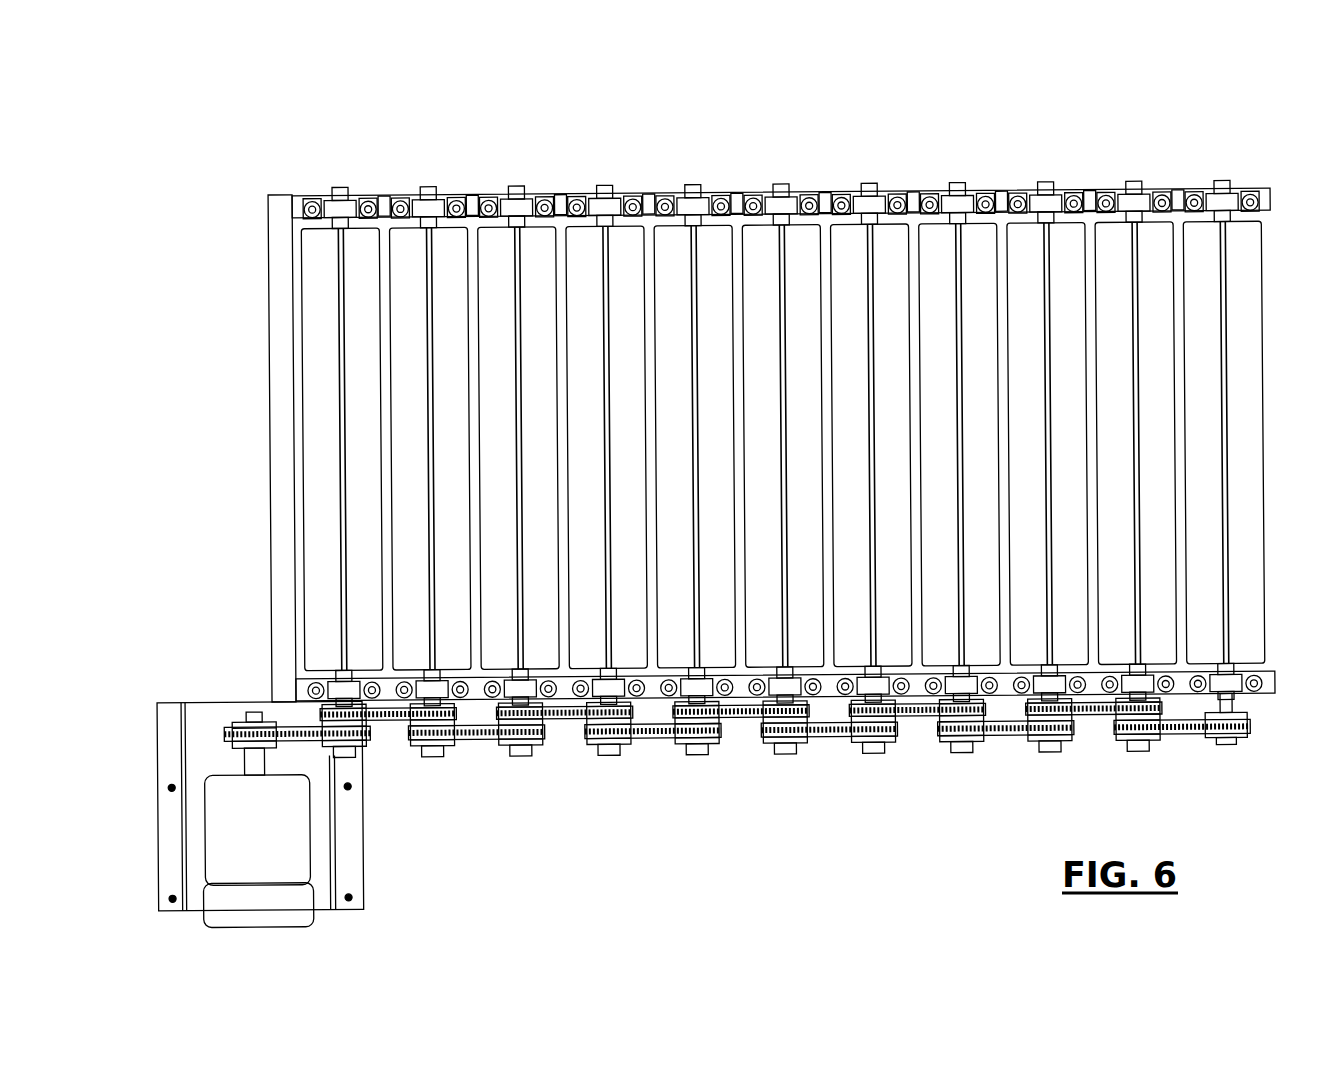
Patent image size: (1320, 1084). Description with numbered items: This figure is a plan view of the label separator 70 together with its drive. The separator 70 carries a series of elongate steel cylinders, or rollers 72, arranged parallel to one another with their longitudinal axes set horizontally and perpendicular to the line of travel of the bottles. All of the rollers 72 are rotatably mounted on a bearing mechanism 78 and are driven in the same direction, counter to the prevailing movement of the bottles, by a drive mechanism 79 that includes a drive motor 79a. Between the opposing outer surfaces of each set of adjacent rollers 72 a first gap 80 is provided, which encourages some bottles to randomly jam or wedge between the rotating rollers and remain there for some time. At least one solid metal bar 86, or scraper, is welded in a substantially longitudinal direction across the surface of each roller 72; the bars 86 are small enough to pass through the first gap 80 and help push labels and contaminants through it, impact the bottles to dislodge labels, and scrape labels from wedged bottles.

The label separator 70 is at (714, 497).
The rollers 72 is at (677, 250).
The bearing mechanism 78 is at (501, 172).
The drive mechanism 79 is at (884, 768).
The drive motor 79a is at (298, 838).
The first gap 80 is at (825, 196).
The solid metal bar 86 is at (1040, 258).